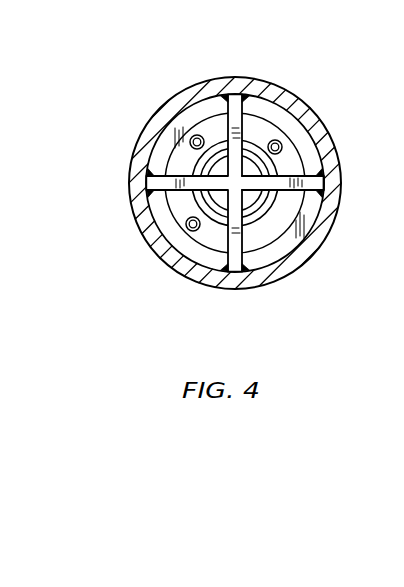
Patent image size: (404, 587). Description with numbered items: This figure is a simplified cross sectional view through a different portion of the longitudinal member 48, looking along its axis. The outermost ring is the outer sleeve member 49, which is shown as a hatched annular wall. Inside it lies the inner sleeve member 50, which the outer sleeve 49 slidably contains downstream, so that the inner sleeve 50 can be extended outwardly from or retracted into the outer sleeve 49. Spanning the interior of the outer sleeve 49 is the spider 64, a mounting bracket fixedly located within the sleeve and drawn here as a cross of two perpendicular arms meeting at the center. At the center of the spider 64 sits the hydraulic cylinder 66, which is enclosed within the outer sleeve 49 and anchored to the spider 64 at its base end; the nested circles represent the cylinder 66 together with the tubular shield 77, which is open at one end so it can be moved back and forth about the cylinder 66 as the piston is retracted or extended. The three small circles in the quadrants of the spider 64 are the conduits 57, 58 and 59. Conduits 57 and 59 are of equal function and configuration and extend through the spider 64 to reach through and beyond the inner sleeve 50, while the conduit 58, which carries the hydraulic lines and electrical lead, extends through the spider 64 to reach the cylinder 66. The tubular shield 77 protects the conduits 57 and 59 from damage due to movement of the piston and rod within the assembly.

The longitudinal member 48 is at (258, 68).
The outer sleeve member 49 is at (318, 253).
The inner sleeve member 50 is at (317, 133).
The conduit 57 is at (272, 141).
The conduit 58 is at (187, 228).
The conduit 59 is at (194, 135).
The spider 64 is at (317, 185).
The hydraulic cylinder 66 is at (146, 163).
The tubular shield 77 is at (263, 217).